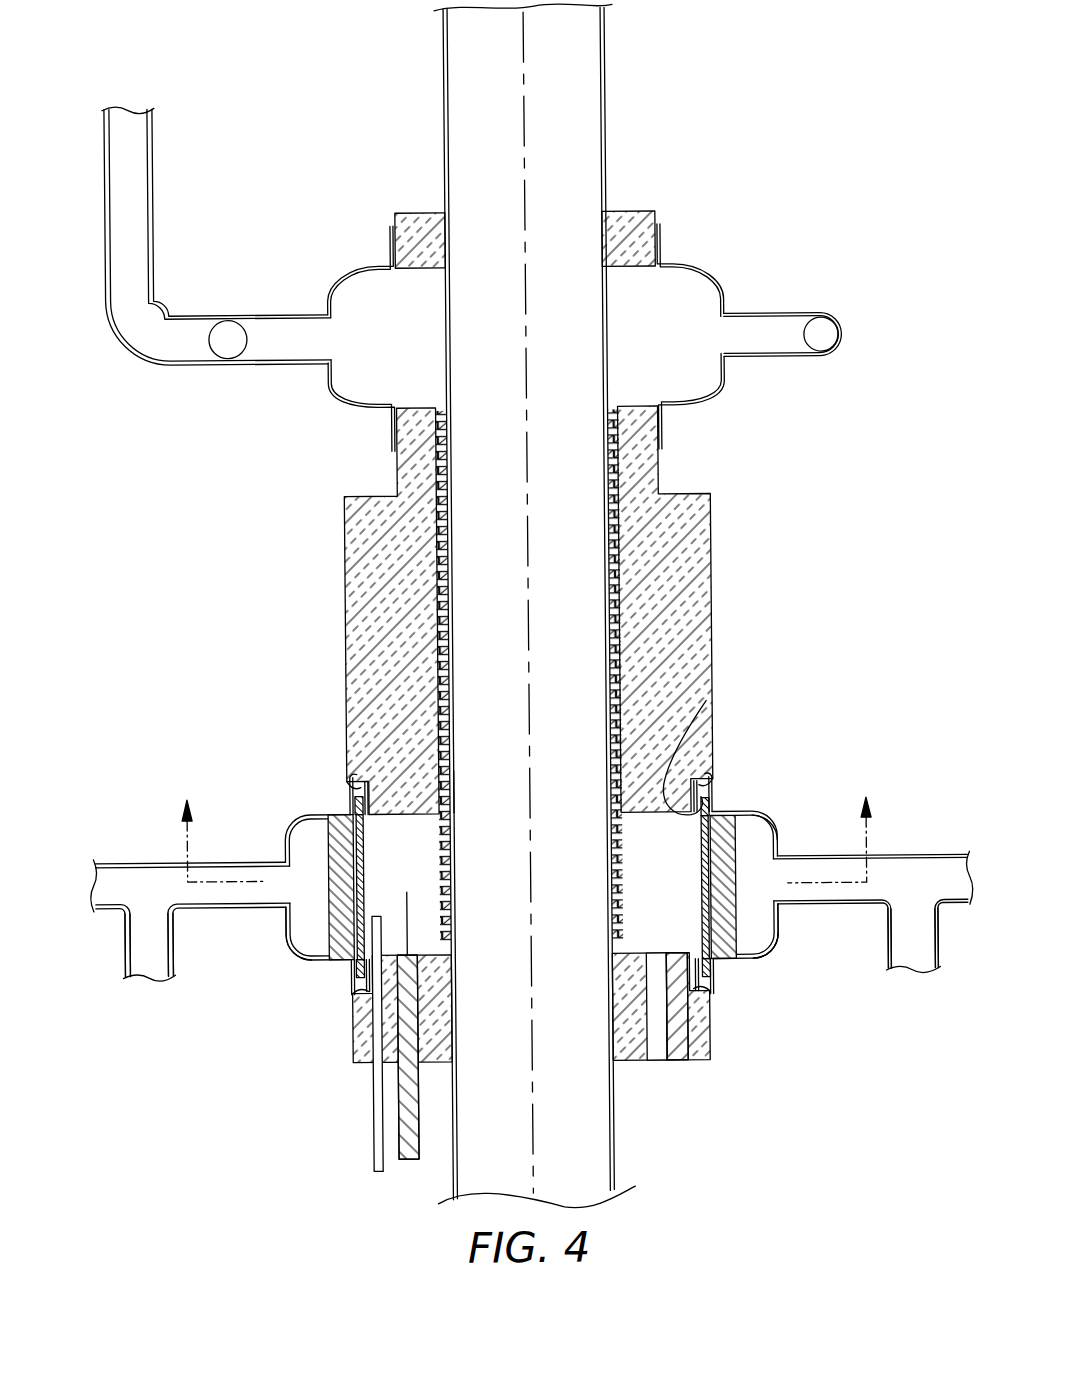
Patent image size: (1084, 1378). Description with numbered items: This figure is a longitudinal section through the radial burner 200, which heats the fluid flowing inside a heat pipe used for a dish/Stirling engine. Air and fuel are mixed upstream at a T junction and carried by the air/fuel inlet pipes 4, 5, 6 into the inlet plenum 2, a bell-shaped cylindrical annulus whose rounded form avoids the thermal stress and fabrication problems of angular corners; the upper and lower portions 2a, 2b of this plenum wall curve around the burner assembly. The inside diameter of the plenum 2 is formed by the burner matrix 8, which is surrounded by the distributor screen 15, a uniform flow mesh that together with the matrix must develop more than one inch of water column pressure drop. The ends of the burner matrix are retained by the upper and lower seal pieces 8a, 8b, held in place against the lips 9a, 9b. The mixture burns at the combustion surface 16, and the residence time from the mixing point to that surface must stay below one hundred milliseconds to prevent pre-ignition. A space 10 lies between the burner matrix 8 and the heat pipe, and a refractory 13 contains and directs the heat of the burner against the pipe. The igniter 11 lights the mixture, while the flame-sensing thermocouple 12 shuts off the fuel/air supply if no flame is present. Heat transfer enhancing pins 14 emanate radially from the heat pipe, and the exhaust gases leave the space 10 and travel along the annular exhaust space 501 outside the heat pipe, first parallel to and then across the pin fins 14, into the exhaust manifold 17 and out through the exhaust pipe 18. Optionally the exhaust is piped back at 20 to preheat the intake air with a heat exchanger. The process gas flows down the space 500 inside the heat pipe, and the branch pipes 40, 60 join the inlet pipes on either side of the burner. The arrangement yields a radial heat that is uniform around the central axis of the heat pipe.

The inlet plenum 2 is at (299, 820).
The upper portion of partition plate 2a is at (757, 818).
The lower portion of partition plate 2b is at (777, 962).
The air/fuel inlet pipe 4 is at (242, 869).
The air/fuel inlet pipe 5 is at (529, 830).
The air/fuel inlet pipe 6 is at (803, 870).
The burner matrix 8 is at (355, 928).
The upper seal ring 8a is at (352, 795).
The lower seal ring 8b is at (350, 967).
The upper lip 9a is at (357, 768).
The lower lip 9b is at (350, 1030).
The space 10 is at (355, 905).
The igniter 11 is at (403, 1157).
The flame-sensing thermocouple 12 is at (367, 1165).
The refractory 13 is at (683, 546).
The heat transfer enhancing pins 14 is at (605, 943).
The distributor screen 15 is at (328, 877).
The combustion surface 16 is at (706, 702).
The exhaust manifold 17 is at (700, 268).
The exhaust pipe 18 is at (770, 312).
The intake air preheat location 20 is at (157, 212).
The branch pipe 40 is at (323, 867).
The branch pipe 60 is at (820, 905).
The radial burner 200 is at (824, 154).
The space inside heat pipe 500 is at (560, 130).
The annular exhaust space 501 is at (450, 800).